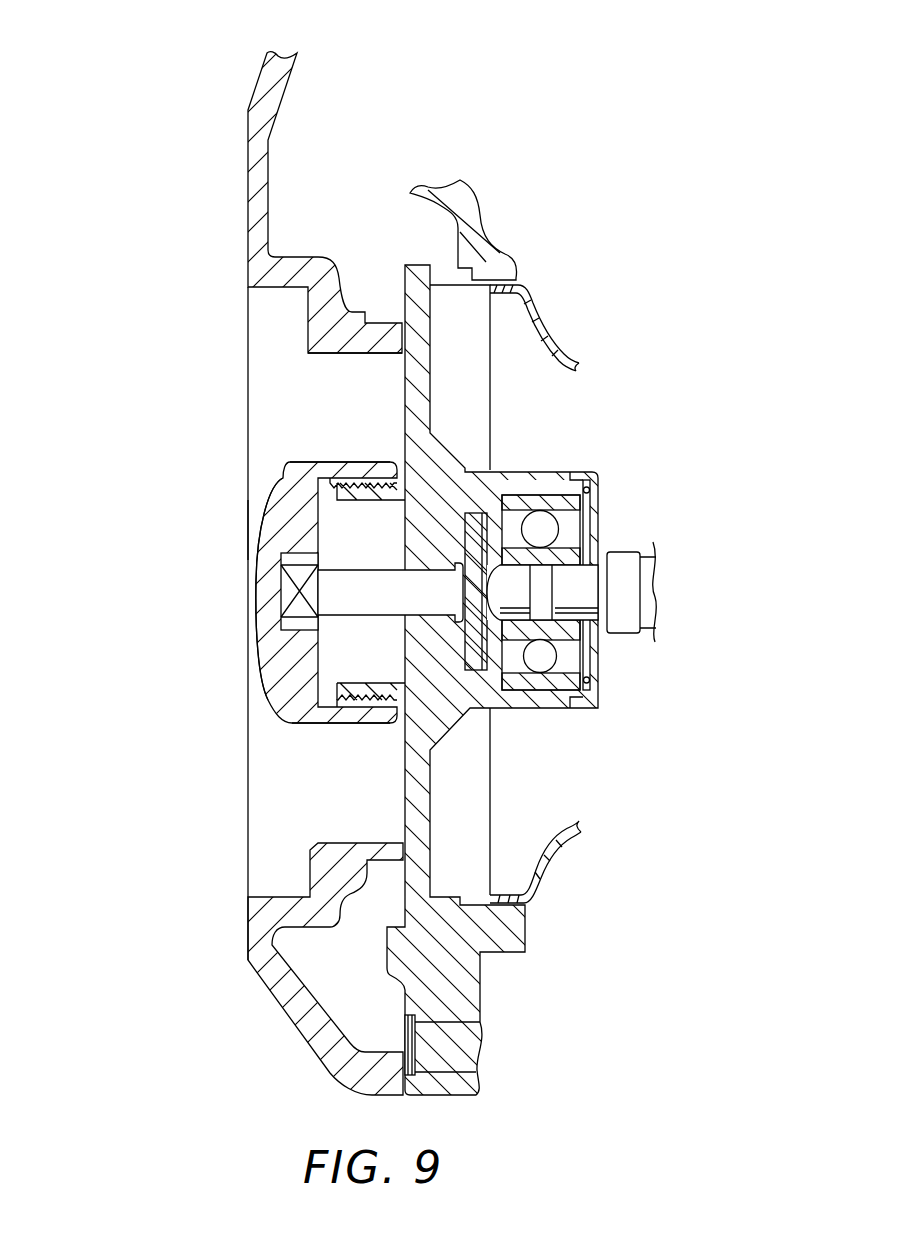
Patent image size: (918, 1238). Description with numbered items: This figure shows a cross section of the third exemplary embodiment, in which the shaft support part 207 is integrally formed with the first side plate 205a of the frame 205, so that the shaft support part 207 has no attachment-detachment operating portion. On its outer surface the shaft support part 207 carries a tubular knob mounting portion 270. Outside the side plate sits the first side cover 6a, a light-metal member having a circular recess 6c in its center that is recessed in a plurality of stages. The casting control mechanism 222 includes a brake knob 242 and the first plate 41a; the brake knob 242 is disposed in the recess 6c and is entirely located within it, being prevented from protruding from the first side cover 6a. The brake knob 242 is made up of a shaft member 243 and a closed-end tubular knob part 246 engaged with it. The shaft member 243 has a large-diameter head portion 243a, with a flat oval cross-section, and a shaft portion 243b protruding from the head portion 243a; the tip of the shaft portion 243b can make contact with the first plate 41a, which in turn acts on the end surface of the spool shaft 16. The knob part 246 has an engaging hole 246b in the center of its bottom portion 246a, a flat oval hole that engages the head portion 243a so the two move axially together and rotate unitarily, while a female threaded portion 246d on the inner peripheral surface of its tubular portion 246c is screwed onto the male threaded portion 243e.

The first side cover 6a is at (242, 82).
The recess 6c is at (307, 877).
The frame 205 is at (548, 202).
The first side plate 205a is at (468, 184).
The shaft support part 207 is at (452, 308).
The casting control mechanism 222 is at (303, 407).
The brake knob 242 is at (297, 447).
The shaft member 243 is at (372, 562).
The head portion 243a is at (248, 530).
The shaft portion 243b is at (370, 603).
The male threaded portion 243e is at (368, 713).
The knob part 246 is at (262, 502).
The bottom portion 246a is at (263, 623).
The engaging hole 246b is at (300, 607).
The tubular portion 246c is at (323, 722).
The female threaded portion 246d is at (358, 706).
The knob mounting portion 270 is at (352, 710).
The first plate 41a is at (484, 543).
The spool shaft 16 is at (622, 588).